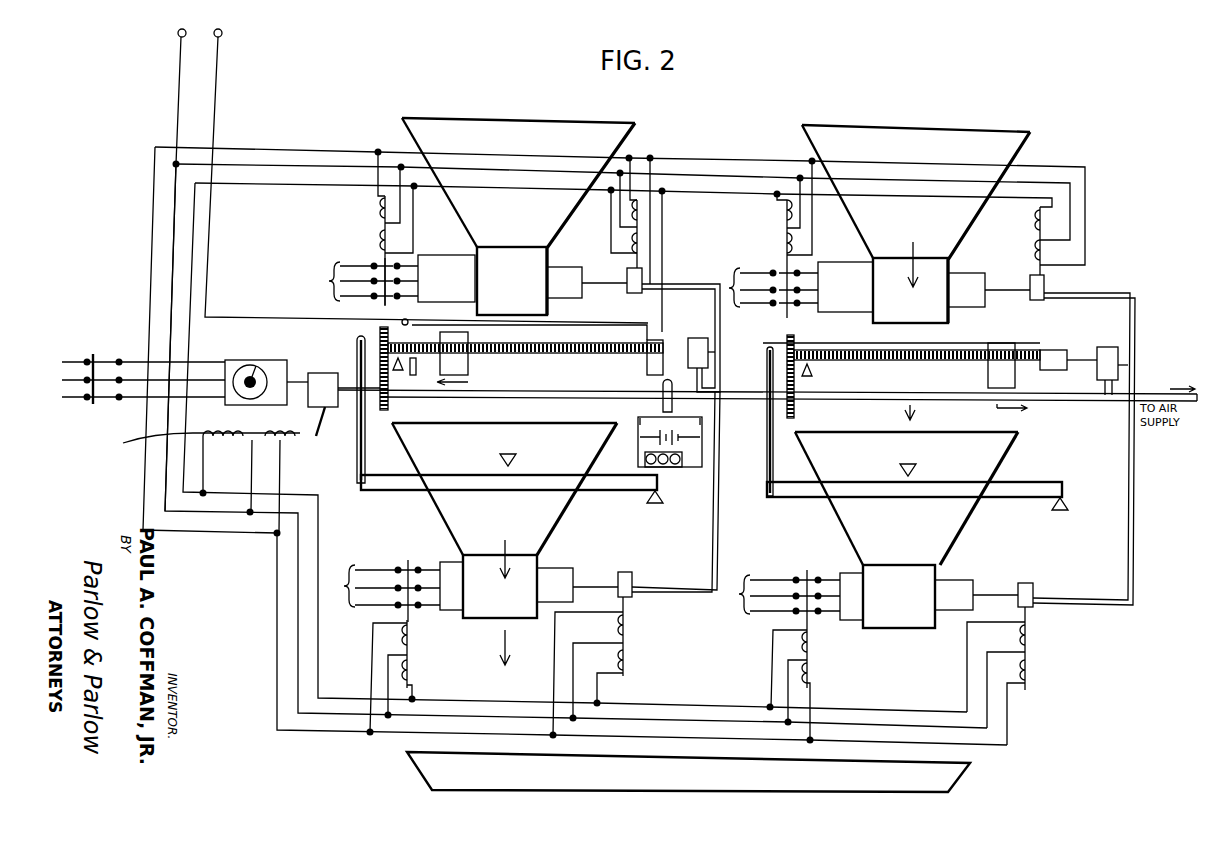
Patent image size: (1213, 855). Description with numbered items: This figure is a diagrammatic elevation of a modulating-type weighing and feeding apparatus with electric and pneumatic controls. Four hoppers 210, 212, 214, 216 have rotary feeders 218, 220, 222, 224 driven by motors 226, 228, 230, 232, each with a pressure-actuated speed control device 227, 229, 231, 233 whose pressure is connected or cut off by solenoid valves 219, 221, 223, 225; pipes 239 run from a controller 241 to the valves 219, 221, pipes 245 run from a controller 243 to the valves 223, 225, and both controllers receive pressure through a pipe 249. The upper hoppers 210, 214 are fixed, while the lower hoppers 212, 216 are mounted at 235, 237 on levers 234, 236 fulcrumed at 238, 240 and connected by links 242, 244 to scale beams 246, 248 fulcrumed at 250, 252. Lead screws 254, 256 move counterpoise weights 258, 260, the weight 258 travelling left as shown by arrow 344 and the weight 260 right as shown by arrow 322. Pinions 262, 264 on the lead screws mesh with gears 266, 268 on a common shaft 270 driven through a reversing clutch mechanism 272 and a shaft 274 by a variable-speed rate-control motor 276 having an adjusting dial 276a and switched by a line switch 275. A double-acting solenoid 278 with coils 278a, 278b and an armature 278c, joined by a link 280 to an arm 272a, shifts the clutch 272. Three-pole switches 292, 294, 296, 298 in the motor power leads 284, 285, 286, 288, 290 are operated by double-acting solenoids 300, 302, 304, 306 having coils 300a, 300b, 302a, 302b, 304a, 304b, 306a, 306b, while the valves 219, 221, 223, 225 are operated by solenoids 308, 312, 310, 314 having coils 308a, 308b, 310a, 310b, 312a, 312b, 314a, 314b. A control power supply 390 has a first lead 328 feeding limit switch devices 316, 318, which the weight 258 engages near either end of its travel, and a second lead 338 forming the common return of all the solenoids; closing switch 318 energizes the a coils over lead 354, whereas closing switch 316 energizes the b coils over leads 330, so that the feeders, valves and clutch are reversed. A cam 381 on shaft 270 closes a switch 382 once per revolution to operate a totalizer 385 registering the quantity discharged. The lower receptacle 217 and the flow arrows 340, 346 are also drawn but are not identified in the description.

The hopper 210 is at (608, 108).
The hopper 212 is at (560, 520).
The hopper 214 is at (985, 125).
The hopper 216 is at (830, 520).
The collecting hopper 217 is at (960, 778).
The rotary feeder 218 is at (560, 262).
The solenoid actuated valve 219 is at (625, 293).
The rotary feeder 220 is at (540, 560).
The solenoid actuated valve 221 is at (633, 578).
The rotary feeder 222 is at (948, 265).
The solenoid actuated valve 223 is at (1046, 283).
The rotary feeder 224 is at (938, 572).
The solenoid actuated valve 225 is at (1035, 588).
The motor 226 is at (452, 240).
The speed control device 227 is at (565, 268).
The motor 228 is at (460, 550).
The speed control device 229 is at (555, 568).
The motor 230 is at (848, 262).
The speed control device 231 is at (975, 273).
The motor 232 is at (855, 562).
The speed control device 233 is at (955, 580).
The lever 234 is at (530, 482).
The mounting 235 is at (518, 458).
The lever 236 is at (1005, 497).
The mounting 237 is at (916, 470).
The fulcrum 238 is at (663, 500).
The pressure conducting pipes 239 is at (722, 325).
The fulcrum 240 is at (1074, 505).
The controller 241 is at (700, 330).
The link 242 is at (395, 458).
The controller 243 is at (1108, 347).
The link 244 is at (767, 463).
The pipes 245 is at (1130, 470).
The scale beam 246 is at (535, 368).
The scale beam 248 is at (875, 365).
The pipe 249 is at (868, 410).
The fulcrum 250 is at (405, 372).
The fulcrum 252 is at (807, 380).
The lead screw 254 is at (570, 345).
The lead screw 256 is at (955, 345).
The counterpoise weight 258 is at (470, 372).
The counterpoise weight 260 is at (986, 380).
The pinion 262 is at (375, 336).
The pinion 264 is at (794, 336).
The gear 266 is at (380, 412).
The gear 268 is at (785, 412).
The common shaft 270 is at (575, 400).
The reversing clutch mechanism 272 is at (338, 405).
The arm 272a is at (312, 437).
The shaft 274 is at (292, 375).
The line switch 275 is at (120, 346).
The rate-control motor 276 is at (246, 361).
The dial 276a is at (260, 345).
The double acting solenoid 278 is at (196, 472).
The coil 278a is at (232, 448).
The coil 278b is at (282, 448).
The armature 278c is at (210, 426).
The link 280 is at (300, 440).
The lead 284 is at (328, 278).
The lead 285 is at (65, 354).
The lead 286 is at (345, 560).
The lead 288 is at (728, 284).
The lead 290 is at (740, 598).
The switch 292 is at (363, 264).
The switch 294 is at (398, 551).
The switch 296 is at (763, 274).
The switch 298 is at (789, 561).
The double acting solenoid 300 is at (356, 228).
The coil 300a is at (370, 240).
The coil 300b is at (370, 200).
The double acting solenoid 302 is at (402, 676).
The coil 302a is at (412, 675).
The coil 302b is at (400, 635).
The double acting solenoid 304 is at (766, 239).
The coil 304a is at (782, 210).
The coil 304b is at (782, 245).
The double acting solenoid 306 is at (799, 680).
The coil 306a is at (800, 645).
The coil 306b is at (812, 680).
The double acting solenoid 308 is at (657, 220).
The coil 308a is at (642, 245).
The coil 308b is at (642, 208).
The double acting solenoid 310 is at (1052, 240).
The coil 310a is at (1046, 218).
The coil 310b is at (1046, 255).
The double acting solenoid 312 is at (622, 666).
The coil 312a is at (628, 665).
The coil 312b is at (617, 625).
The double acting solenoid 314 is at (1024, 676).
The coil 314a is at (1000, 634).
The coil 314b is at (1028, 685).
The limit switch device 316 is at (415, 375).
The limit switch device 318 is at (645, 375).
The arrow 322 is at (1000, 410).
The first lead 328 is at (220, 82).
The leads 330 is at (690, 165).
The second lead 338 is at (170, 96).
The material flow arrow 340 is at (505, 540).
The arrow 344 is at (460, 385).
The material flow arrow 346 is at (905, 280).
The lead 354 is at (252, 183).
The cam 381 is at (660, 405).
The switch 382 is at (655, 428).
The totalizer 385 is at (680, 467).
The power supply source 390 is at (205, 45).